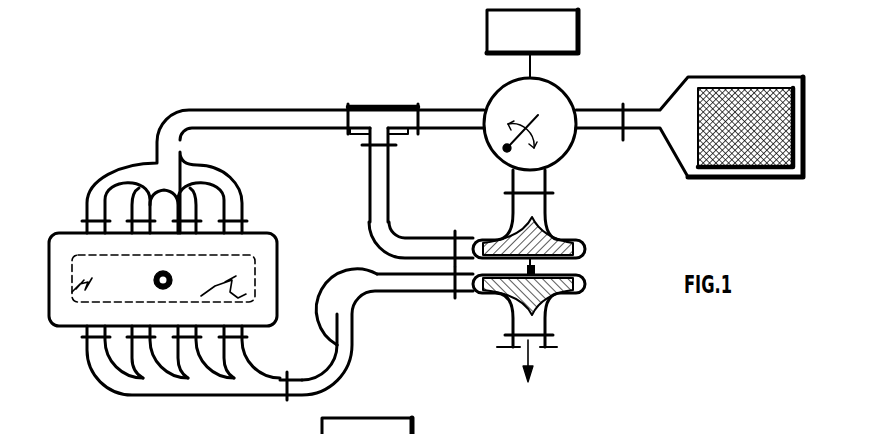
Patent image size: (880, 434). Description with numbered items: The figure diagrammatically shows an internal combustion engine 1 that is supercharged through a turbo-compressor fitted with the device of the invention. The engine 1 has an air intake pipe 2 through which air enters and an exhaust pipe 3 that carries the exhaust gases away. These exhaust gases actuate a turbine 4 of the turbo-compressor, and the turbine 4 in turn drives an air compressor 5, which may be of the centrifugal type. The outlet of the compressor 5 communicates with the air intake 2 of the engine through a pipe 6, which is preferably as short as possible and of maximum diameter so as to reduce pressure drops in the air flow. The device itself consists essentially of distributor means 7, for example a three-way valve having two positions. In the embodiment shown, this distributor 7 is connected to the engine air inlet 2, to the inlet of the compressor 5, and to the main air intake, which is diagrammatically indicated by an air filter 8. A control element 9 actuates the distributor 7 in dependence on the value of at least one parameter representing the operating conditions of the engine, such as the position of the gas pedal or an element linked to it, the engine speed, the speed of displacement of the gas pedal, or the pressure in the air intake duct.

The internal combustion engine 1 is at (77, 232).
The air intake pipe 2 is at (371, 105).
The exhaust pipe 3 is at (197, 395).
The turbine 4 is at (585, 288).
The air compressor 5 is at (585, 243).
The pipe 6 is at (370, 197).
The distributor means 7 is at (570, 155).
The air filter 8 is at (722, 95).
The control element 9 is at (578, 34).